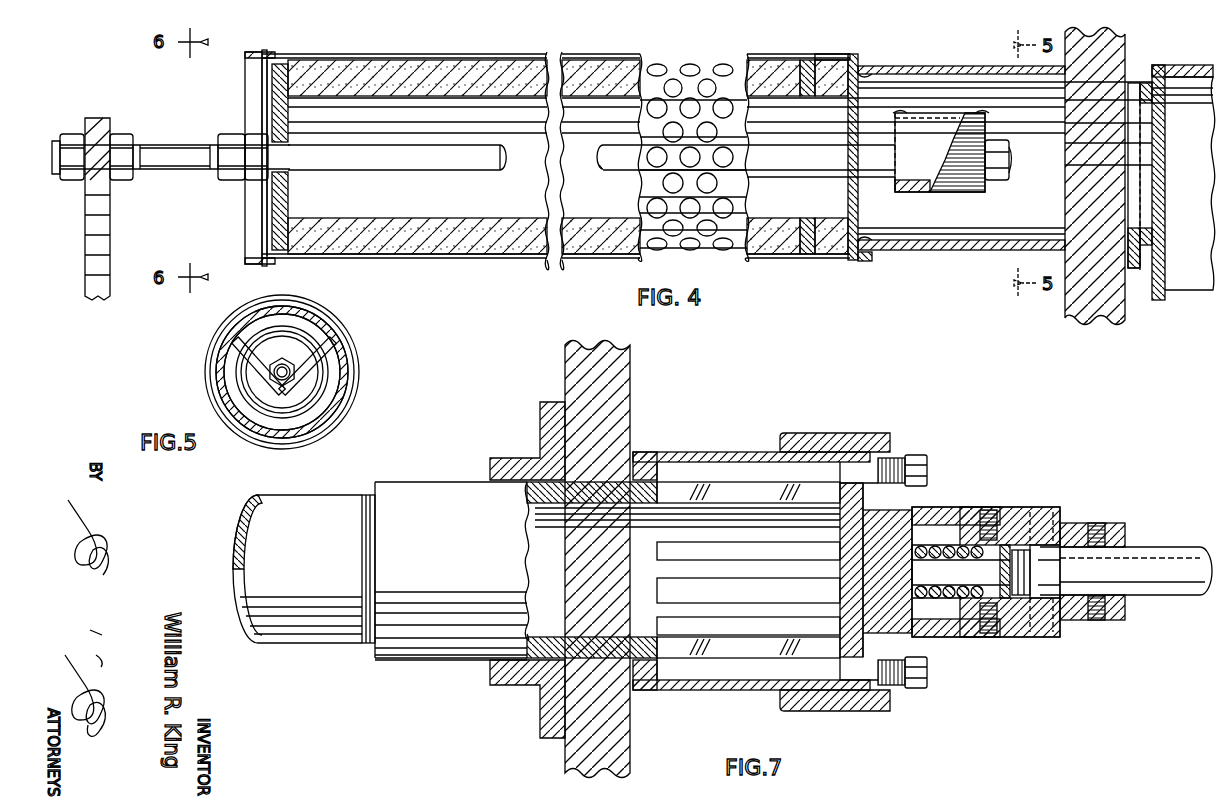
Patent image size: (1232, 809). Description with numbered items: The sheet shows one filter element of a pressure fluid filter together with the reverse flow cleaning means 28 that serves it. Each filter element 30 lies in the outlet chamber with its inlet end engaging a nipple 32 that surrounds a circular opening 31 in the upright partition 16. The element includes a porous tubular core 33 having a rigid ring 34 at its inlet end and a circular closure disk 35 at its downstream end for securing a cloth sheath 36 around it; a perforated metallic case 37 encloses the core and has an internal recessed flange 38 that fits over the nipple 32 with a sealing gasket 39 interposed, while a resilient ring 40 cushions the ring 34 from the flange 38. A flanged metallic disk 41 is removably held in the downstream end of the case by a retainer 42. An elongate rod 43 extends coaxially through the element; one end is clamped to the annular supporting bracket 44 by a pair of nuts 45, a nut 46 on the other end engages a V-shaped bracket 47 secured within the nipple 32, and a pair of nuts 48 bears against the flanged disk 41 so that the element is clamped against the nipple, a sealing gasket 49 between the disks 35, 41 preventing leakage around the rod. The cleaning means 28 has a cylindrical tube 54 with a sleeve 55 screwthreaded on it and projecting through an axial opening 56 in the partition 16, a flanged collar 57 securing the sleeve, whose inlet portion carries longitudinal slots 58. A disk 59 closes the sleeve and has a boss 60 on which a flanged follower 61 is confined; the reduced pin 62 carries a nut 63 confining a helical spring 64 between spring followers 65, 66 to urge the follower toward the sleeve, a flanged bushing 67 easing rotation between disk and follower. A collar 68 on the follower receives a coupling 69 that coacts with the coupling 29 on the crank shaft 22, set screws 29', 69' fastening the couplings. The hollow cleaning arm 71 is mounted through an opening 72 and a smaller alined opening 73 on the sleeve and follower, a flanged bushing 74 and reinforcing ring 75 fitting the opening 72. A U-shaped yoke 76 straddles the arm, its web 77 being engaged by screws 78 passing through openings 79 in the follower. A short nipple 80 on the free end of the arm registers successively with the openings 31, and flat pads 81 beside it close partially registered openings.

In FIG. 4, the upright wall or partition 16 is at (1088, 308).
In FIG. 7, the upright wall or partition 16 is at (632, 376).
In FIG. 7, the shaft 22 is at (1158, 596).
In FIG. 4, the reverse flow cleaning means 28 is at (1175, 302).
In FIG. 7, the reverse flow cleaning means 28 is at (402, 665).
In FIG. 7, the coupling 29 is at (1103, 558).
In FIG. 7, the set screw 29' is at (1098, 584).
In FIG. 4, the filter element 30 is at (460, 55).
In FIG. 5, the filter element 30 is at (212, 352).
In FIG. 4, the circular opening 31 is at (1082, 232).
In FIG. 4, the nipple 32 is at (965, 66).
In FIG. 5, the nipple 32 is at (342, 356).
In FIG. 4, the tubular core 33 is at (432, 222).
In FIG. 4, the ring 34 is at (810, 218).
In FIG. 4, the circular closure plate or disk 35 is at (286, 178).
In FIG. 5, the circular closure plate or disk 35 is at (282, 405).
In FIG. 4, the cloth sheath or sleeve 36 is at (440, 257).
In FIG. 4, the perforated metallic case or shell 37 is at (690, 256).
In FIG. 5, the perforated metallic case or shell 37 is at (214, 398).
In FIG. 4, the internal recessed flange 38 is at (856, 262).
In FIG. 5, the internal recessed flange 38 is at (340, 425).
In FIG. 4, the sealing gasket 39 is at (868, 82).
In FIG. 5, the sealing gasket 39 is at (300, 325).
In FIG. 4, the resilient ring 40 is at (848, 60).
In FIG. 4, the flanged metallic disk or closure plate 41 is at (245, 78).
In FIG. 4, the retainer 42 is at (262, 56).
In FIG. 4, the elongate rod 43 is at (620, 170).
In FIG. 5, the elongate rod 43 is at (284, 362).
In FIG. 4, the annular supporting member or bracket 44 is at (110, 233).
In FIG. 4, the nuts 45 is at (72, 140).
In FIG. 4, the nut 46 is at (993, 183).
In FIG. 5, the nut 46 is at (303, 380).
In FIG. 4, the V-shaped bracket 47 is at (906, 193).
In FIG. 5, the V-shaped bracket 47 is at (262, 380).
In FIG. 4, the nuts 48 is at (238, 175).
In FIG. 4, the sealing gasket 49 is at (262, 133).
In FIG. 7, the cylindrical tube or pipe 54 is at (312, 645).
In FIG. 7, the sleeve 55 is at (448, 482).
In FIG. 7, the axial opening 56 is at (590, 503).
In FIG. 7, the flanged collar 57 is at (540, 710).
In FIG. 7, the elongate openings or slots 58 is at (657, 590).
In FIG. 7, the circular plate or disk 59 is at (850, 590).
In FIG. 7, the axial external boss 60 is at (912, 560).
In FIG. 7, the annular externally flanged follower 61 is at (900, 457).
In FIG. 7, the coaxial pin 62 is at (945, 597).
In FIG. 7, the nut 63 is at (1035, 600).
In FIG. 7, the helical spring 64 is at (950, 558).
In FIG. 7, the spring follower 65 is at (940, 555).
In FIG. 7, the spring follower 66 is at (1030, 568).
In FIG. 7, the annular flanged bushing 67 is at (860, 545).
In FIG. 7, the collar 68 is at (936, 638).
In FIG. 7, the coupling 69 is at (1010, 559).
In FIG. 7, the set screw 69' is at (998, 555).
In FIG. 4, the hollow member or arm 71 is at (1195, 66).
In FIG. 7, the hollow member or arm 71 is at (704, 690).
In FIG. 7, the opening 72 is at (660, 468).
In FIG. 7, the alined opening 73 is at (908, 512).
In FIG. 7, the annular flanged bushing 74 is at (645, 660).
In FIG. 7, the ring 75 is at (645, 454).
In FIG. 7, the angular bracket or U-shaped yoke 76 is at (808, 434).
In FIG. 7, the web portion 77 is at (866, 660).
In FIG. 7, the screws 78 is at (928, 472).
In FIG. 7, the axially directed openings 79 is at (900, 690).
In FIG. 4, the nipple 80 is at (1160, 105).
In FIG. 4, the flat pad 81 is at (1160, 250).